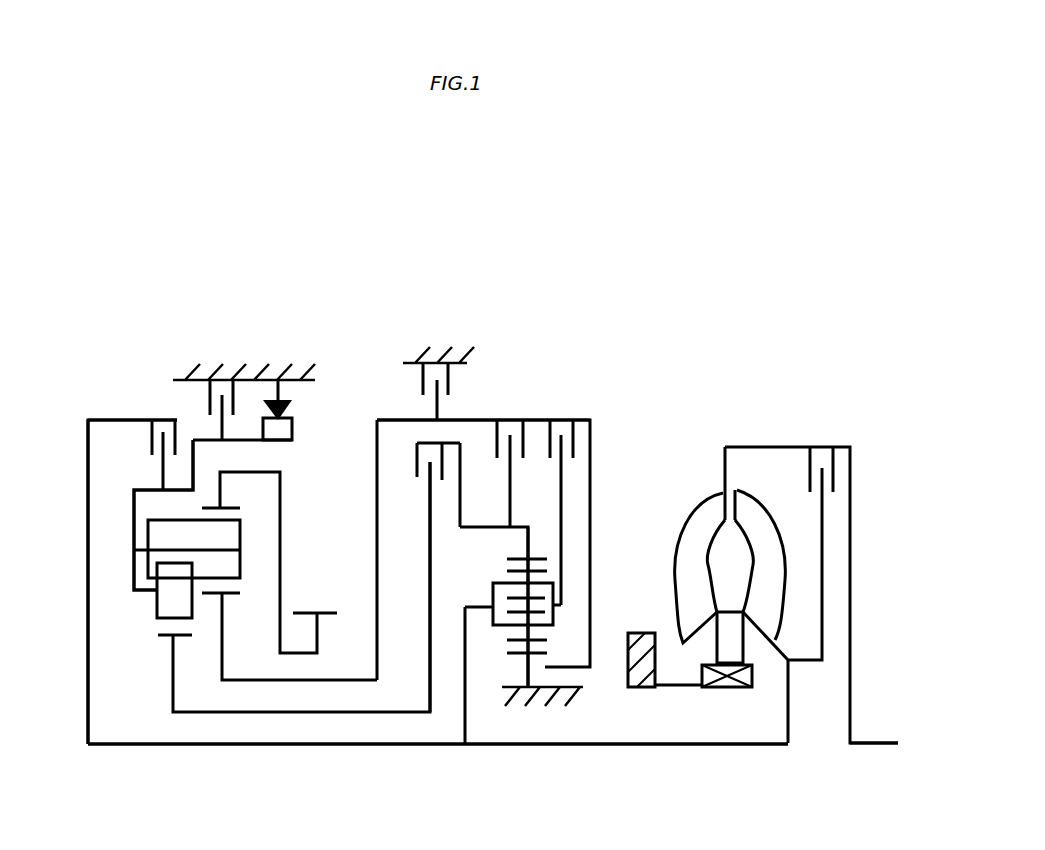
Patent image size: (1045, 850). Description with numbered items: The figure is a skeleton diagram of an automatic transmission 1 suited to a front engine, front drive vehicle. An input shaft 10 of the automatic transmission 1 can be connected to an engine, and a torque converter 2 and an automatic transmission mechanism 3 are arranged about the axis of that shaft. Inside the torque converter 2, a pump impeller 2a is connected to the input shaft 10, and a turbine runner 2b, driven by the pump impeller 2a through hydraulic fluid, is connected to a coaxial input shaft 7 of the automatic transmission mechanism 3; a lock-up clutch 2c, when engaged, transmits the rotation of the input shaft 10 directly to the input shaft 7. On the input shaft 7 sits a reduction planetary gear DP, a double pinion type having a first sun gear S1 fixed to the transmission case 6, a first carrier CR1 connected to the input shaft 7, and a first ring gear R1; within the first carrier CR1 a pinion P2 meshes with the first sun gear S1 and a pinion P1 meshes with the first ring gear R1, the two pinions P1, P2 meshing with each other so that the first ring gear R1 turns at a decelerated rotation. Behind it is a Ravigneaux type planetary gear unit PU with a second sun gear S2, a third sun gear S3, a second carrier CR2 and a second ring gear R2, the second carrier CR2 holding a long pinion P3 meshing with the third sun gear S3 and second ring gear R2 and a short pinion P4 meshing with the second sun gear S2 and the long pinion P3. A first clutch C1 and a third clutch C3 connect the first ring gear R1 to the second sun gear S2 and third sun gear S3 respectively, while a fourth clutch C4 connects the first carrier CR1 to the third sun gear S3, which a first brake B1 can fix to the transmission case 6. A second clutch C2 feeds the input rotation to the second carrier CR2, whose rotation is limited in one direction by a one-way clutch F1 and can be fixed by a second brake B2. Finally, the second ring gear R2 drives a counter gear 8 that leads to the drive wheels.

The automatic transmission 1 is at (660, 340).
The torque converter 2 is at (737, 430).
The pump impeller 2a is at (702, 513).
The turbine runner 2b is at (755, 512).
The lock-up clutch 2c is at (838, 470).
The automatic transmission mechanism 3 is at (372, 360).
The transmission case 6 is at (184, 378).
The input shaft of the automatic transmission mechanism 7 is at (540, 745).
The counter gear 8 is at (325, 612).
The input shaft of the automatic transmission 10 is at (870, 743).
The planetary gear unit PU is at (120, 522).
The reduction planetary gear DP is at (552, 534).
The first clutch C1 is at (455, 577).
The second clutch C2 is at (161, 442).
The third clutch C3 is at (509, 460).
The fourth clutch C4 is at (561, 499).
The first brake B1 is at (438, 369).
The second brake B2 is at (224, 387).
The one-way clutch F1 is at (277, 387).
The first sun gear S1 is at (516, 656).
The second sun gear S2 is at (163, 638).
The third sun gear S3 is at (232, 595).
The pinion P1 is at (508, 572).
The pinion P2 is at (512, 640).
The long pinion P3 is at (245, 540).
The short pinion P4 is at (152, 626).
The first ring gear R1 is at (510, 557).
The second ring gear R2 is at (235, 506).
The first carrier CR1 is at (555, 612).
The second carrier CR2 is at (133, 512).